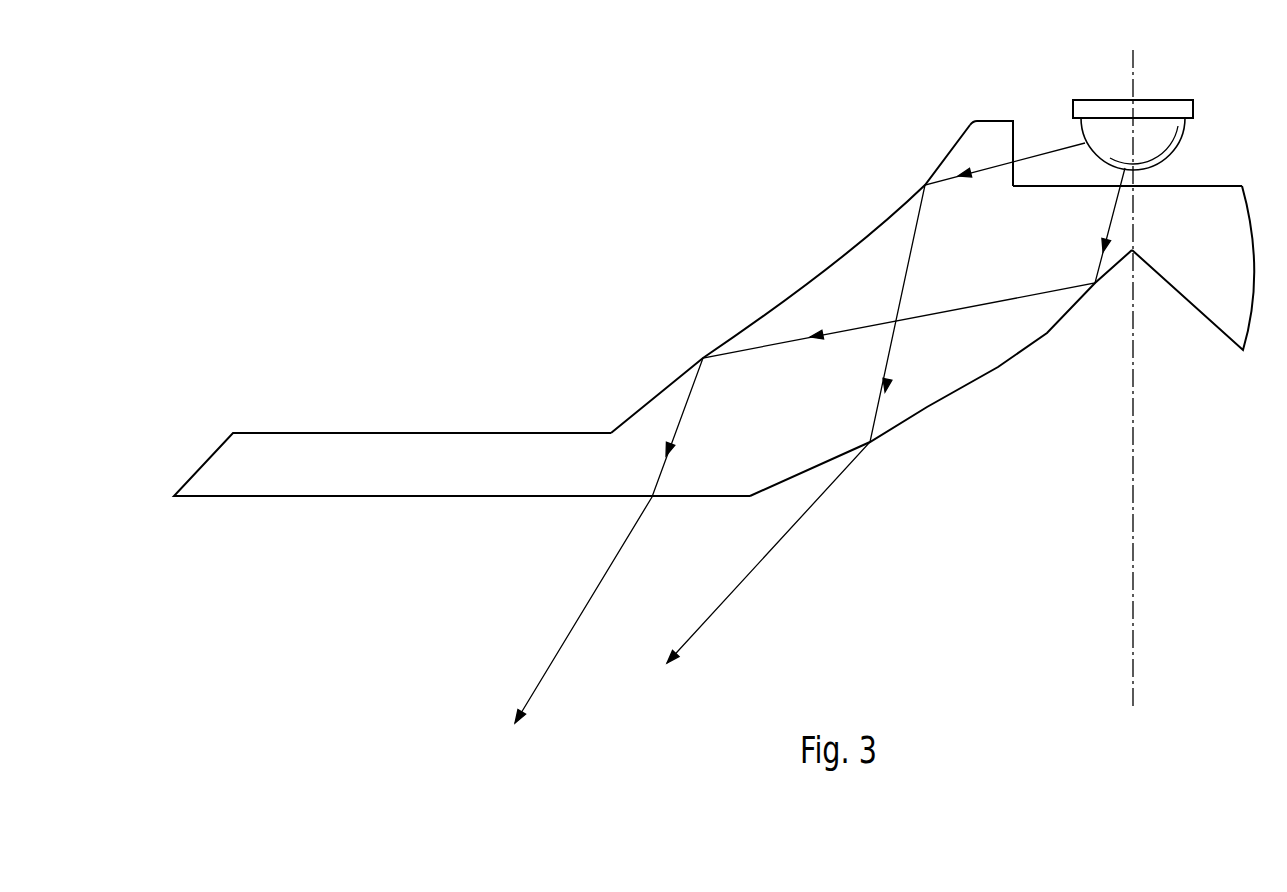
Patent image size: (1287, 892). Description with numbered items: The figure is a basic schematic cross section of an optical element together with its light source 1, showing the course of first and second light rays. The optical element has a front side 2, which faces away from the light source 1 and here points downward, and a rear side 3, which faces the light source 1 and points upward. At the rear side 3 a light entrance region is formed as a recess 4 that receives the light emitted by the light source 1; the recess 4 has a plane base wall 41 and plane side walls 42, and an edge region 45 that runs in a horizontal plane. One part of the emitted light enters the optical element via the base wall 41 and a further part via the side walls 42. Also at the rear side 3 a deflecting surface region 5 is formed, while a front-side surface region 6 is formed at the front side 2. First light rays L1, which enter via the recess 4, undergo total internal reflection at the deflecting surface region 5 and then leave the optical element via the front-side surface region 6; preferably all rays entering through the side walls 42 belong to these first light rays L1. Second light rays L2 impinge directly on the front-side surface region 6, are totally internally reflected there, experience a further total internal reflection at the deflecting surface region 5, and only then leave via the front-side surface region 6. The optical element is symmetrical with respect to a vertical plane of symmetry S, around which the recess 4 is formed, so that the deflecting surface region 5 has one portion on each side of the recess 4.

The light source 1 is at (1145, 133).
The front side 2 is at (400, 590).
The rear side 3 is at (707, 160).
The recess 4 is at (1045, 137).
The base wall 41 is at (1217, 186).
The side walls 42 is at (1015, 135).
The edge region 45 is at (1008, 118).
The deflecting surface region 5 is at (877, 232).
The front-side surface region 6 is at (998, 366).
The plane of symmetry S is at (1134, 492).
The first light rays L1 is at (865, 419).
The second light rays L2 is at (812, 462).